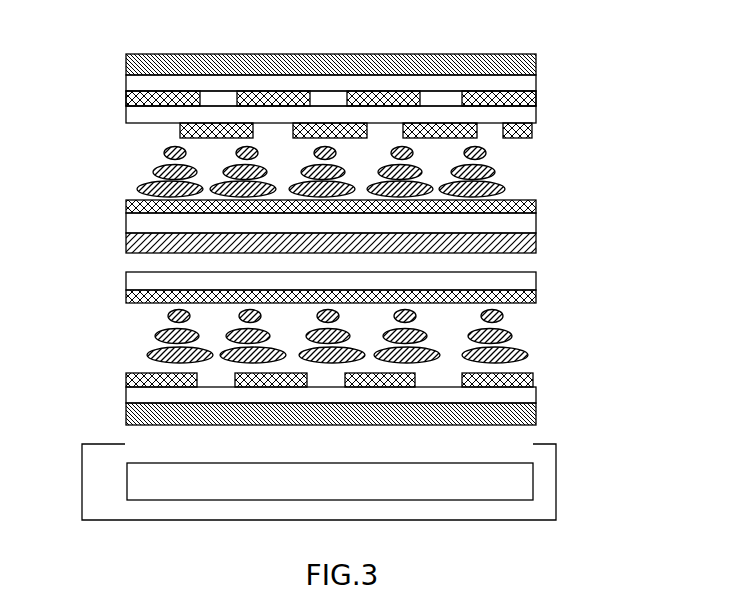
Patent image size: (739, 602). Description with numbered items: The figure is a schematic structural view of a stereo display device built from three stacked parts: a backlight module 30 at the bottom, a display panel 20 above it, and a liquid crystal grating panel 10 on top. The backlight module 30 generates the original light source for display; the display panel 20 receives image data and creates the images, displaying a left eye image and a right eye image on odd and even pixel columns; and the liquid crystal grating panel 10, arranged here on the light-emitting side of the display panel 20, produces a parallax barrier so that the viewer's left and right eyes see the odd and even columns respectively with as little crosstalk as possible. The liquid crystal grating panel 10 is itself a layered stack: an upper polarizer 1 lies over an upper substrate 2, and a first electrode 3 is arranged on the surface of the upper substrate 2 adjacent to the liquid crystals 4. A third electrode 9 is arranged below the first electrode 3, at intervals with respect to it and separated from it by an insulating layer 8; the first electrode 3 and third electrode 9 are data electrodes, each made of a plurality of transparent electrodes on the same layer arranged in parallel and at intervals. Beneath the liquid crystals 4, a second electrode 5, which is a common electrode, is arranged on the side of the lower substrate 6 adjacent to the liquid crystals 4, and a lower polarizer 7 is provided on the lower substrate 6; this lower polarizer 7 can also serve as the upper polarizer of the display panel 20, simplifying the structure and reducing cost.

The upper polarizer 1 is at (126, 57).
The upper substrate 2 is at (125, 78).
The first electrode 3 is at (125, 92).
The liquid crystals 4 is at (156, 170).
The second electrode 5 is at (126, 201).
The lower substrate 6 is at (125, 222).
The lower polarizer 7 is at (125, 240).
The insulating layer 8 is at (125, 113).
The third electrode 9 is at (180, 130).
The liquid crystal grating panel 10 is at (330, 142).
The display panel 20 is at (579, 272).
The backlight module 30 is at (603, 443).